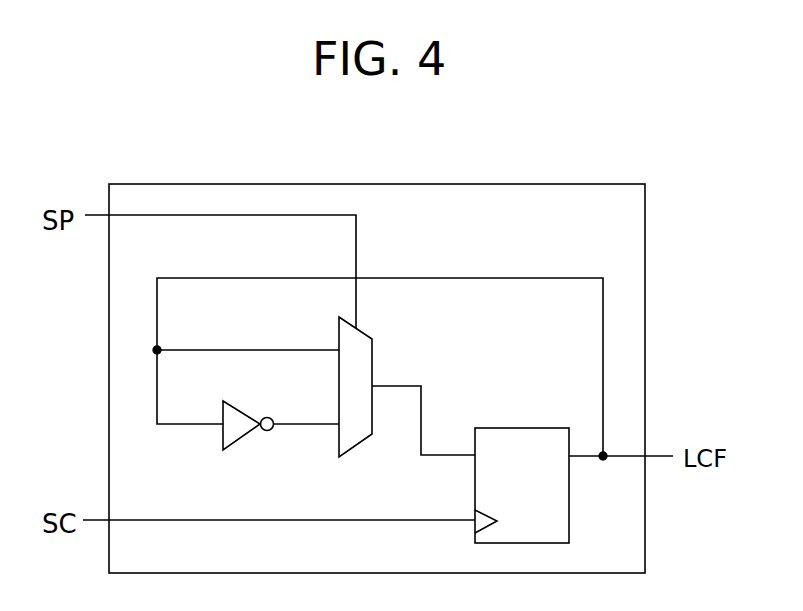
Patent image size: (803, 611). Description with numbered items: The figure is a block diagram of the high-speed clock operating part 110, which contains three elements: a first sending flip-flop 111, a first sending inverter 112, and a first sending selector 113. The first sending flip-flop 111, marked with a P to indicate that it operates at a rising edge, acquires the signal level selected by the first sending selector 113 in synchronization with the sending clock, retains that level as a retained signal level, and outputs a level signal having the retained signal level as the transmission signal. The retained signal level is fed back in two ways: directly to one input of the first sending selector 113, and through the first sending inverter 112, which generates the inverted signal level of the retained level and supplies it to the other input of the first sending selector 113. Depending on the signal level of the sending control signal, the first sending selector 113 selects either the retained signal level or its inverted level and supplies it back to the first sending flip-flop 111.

The high-speed clock operating part 110 is at (537, 184).
The first sending flip-flop 111 is at (522, 428).
The first sending inverter 112 is at (237, 440).
The first sending selector 113 is at (375, 348).